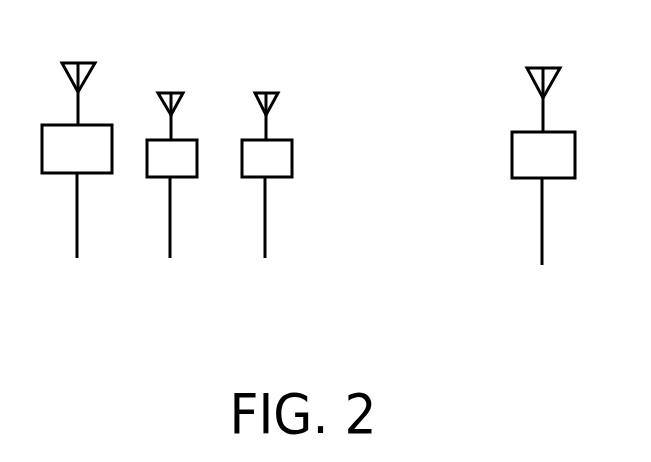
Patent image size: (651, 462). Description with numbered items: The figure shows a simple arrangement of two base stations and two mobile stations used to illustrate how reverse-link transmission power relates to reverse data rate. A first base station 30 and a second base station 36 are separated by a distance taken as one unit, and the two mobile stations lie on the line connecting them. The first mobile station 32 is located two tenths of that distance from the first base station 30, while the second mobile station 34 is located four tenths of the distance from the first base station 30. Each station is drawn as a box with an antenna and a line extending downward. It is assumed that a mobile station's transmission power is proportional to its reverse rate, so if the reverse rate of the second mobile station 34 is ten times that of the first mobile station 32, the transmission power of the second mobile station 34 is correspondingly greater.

The first base station 30 is at (77, 209).
The first mobile station 32 is at (168, 224).
The second mobile station 34 is at (265, 224).
The second base station 36 is at (542, 211).